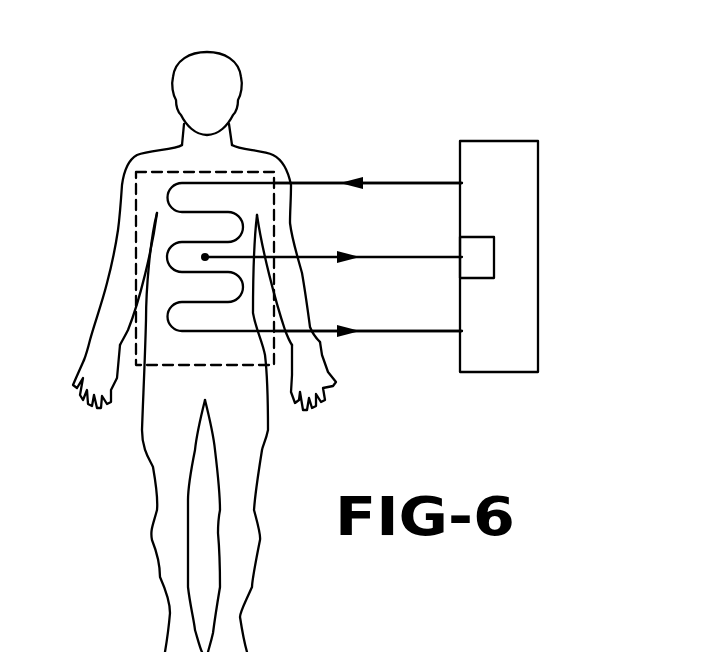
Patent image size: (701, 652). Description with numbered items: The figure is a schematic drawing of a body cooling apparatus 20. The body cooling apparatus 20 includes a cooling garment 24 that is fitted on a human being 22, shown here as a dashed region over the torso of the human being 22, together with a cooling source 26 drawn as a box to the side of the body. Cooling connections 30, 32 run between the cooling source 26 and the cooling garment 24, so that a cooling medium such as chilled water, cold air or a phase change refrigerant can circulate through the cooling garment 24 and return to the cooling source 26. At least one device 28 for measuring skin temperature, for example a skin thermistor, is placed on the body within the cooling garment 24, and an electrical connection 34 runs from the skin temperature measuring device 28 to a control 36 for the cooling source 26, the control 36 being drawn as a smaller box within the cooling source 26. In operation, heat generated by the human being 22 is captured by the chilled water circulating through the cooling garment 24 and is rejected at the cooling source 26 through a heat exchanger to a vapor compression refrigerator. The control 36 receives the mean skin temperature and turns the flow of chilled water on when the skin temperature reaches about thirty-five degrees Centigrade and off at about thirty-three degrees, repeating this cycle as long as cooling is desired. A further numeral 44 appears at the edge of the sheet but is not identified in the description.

The body cooling apparatus 20 is at (334, 121).
The human being 22 is at (110, 131).
The cooling garment 24 is at (137, 288).
The cooling source 26 is at (500, 140).
The device for measuring skin temperature 28 is at (205, 257).
The cooling connection 30 is at (405, 183).
The cooling connection 32 is at (410, 332).
The electrical connection 34 is at (425, 257).
The control 36 is at (485, 250).
The element 44 is at (518, 647).